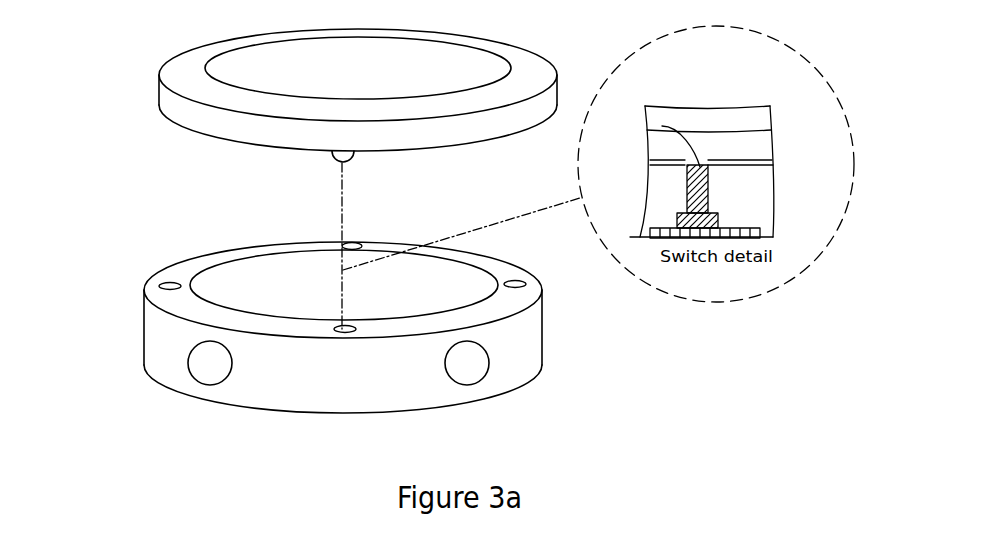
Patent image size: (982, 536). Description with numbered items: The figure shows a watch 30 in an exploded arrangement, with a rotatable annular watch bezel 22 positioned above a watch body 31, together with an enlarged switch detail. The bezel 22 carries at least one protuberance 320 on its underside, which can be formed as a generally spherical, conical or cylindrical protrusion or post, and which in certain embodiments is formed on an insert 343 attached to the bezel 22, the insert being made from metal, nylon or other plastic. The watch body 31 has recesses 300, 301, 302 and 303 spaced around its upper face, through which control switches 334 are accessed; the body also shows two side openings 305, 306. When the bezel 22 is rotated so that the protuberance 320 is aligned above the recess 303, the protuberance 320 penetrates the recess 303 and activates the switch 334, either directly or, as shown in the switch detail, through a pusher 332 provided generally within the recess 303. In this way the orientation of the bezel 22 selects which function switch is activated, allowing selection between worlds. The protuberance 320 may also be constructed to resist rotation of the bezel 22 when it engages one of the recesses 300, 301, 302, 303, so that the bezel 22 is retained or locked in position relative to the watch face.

The watch bezel 22 is at (160, 110).
The watch 30 is at (97, 453).
The watch body 31 is at (543, 360).
The recess 300 is at (172, 283).
The recess 301 is at (353, 243).
The recess 302 is at (514, 281).
The recess 303 is at (347, 327).
The side opening 305 is at (468, 365).
The side opening 306 is at (209, 365).
The protuberance 320 is at (348, 157).
The pusher 332 is at (708, 187).
The control switch 334 is at (718, 213).
The insert 343 is at (661, 142).